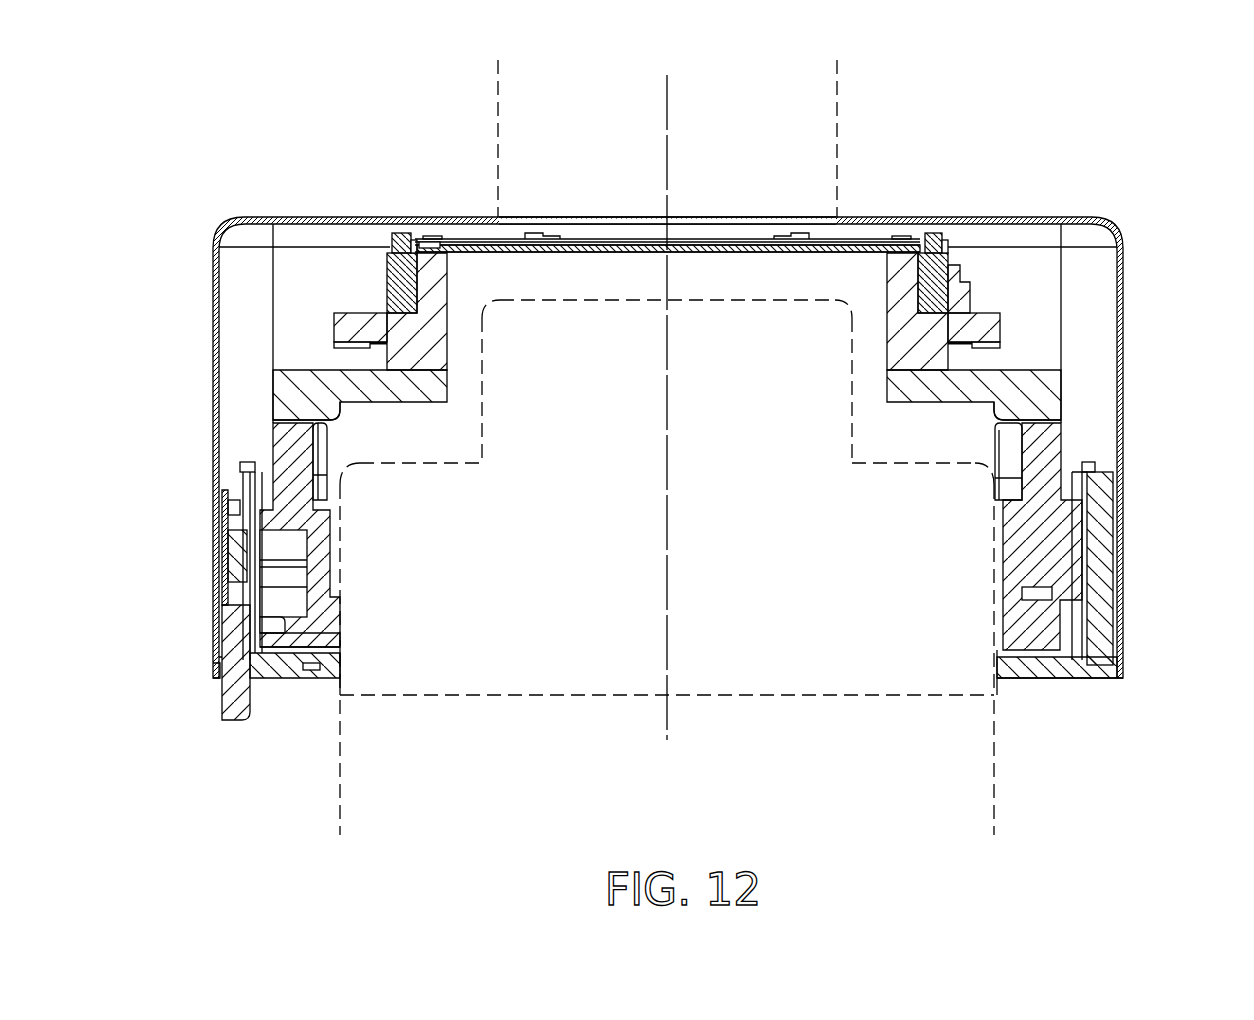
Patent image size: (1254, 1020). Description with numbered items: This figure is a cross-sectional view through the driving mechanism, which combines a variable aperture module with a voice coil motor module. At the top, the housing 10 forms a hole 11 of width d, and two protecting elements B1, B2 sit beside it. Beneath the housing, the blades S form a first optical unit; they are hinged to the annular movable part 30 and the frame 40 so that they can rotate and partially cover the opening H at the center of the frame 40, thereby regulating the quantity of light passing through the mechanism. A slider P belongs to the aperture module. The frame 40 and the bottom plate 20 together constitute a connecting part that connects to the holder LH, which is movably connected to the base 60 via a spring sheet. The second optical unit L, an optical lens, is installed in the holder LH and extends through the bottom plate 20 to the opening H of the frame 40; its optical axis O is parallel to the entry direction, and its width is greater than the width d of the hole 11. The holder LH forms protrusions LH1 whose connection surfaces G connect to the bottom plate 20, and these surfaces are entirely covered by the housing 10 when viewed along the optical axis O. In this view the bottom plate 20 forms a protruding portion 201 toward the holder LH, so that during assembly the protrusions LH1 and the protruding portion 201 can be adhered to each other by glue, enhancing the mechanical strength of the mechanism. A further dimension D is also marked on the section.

The housing 10 is at (246, 217).
The hole 11 is at (778, 216).
The bottom plate 20 is at (273, 390).
The protruding portion 201 is at (272, 408).
The annular movable part 30 is at (937, 232).
The frame 40 is at (985, 330).
The base 60 is at (297, 680).
The protecting element B1 is at (424, 236).
The protecting element B2 is at (616, 239).
The blades S is at (489, 243).
The second optical unit L is at (560, 300).
The optical axis O is at (670, 85).
The opening H is at (858, 265).
The slider P is at (962, 262).
The connection surfaces G is at (306, 426).
The protrusion LH1 is at (292, 482).
The holder LH is at (1003, 566).
The width d is at (498, 38).
The diameter D is at (340, 823).